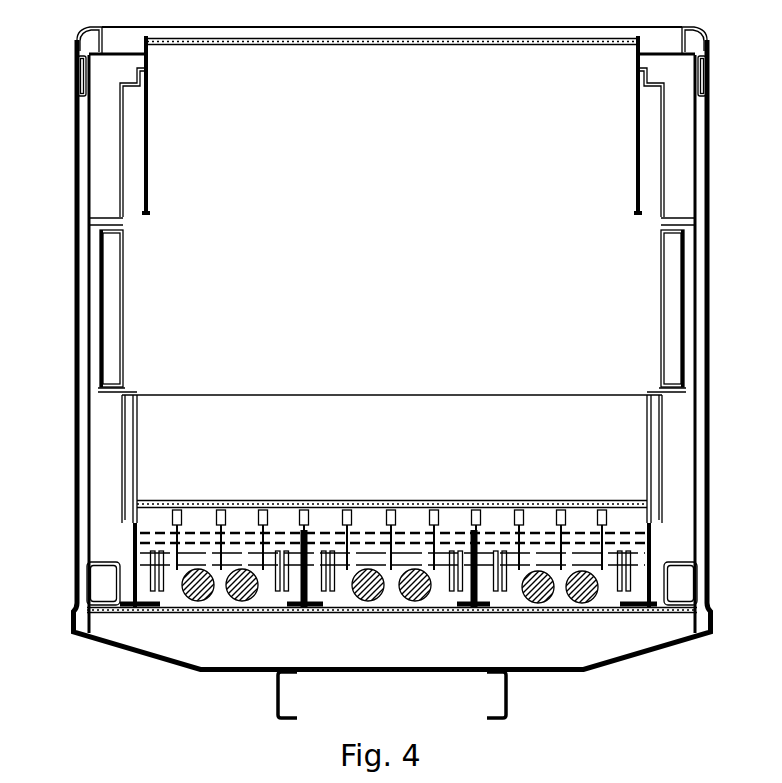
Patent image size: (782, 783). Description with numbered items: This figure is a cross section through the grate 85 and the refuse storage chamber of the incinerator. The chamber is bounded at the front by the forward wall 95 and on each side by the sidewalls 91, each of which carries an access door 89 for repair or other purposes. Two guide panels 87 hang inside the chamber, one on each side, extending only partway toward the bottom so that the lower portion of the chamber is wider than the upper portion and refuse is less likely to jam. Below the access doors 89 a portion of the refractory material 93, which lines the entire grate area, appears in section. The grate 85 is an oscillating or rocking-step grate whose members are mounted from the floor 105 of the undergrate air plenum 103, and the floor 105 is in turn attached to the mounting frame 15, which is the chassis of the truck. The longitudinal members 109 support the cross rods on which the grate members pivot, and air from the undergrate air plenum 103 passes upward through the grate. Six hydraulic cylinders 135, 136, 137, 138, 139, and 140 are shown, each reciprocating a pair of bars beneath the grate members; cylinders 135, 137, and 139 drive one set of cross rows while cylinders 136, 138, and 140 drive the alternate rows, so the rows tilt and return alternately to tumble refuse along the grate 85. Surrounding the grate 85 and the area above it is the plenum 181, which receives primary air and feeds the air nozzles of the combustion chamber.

The mounting frame 15 is at (282, 692).
The grate 85 is at (468, 500).
The guide panel 87 is at (148, 204).
The access door 89 is at (124, 316).
The sidewall 91 is at (124, 222).
The refractory material 93 is at (134, 445).
The forward wall 95 is at (378, 192).
The undergrate air plenum 103 is at (172, 603).
The floor 105 is at (348, 612).
The longitudinal member 109 is at (298, 615).
The hydraulic cylinder 135 is at (198, 602).
The hydraulic cylinder 136 is at (239, 603).
The hydraulic cylinder 137 is at (379, 602).
The hydraulic cylinder 138 is at (427, 603).
The hydraulic cylinder 139 is at (532, 605).
The hydraulic cylinder 140 is at (575, 605).
The plenum 181 is at (98, 465).